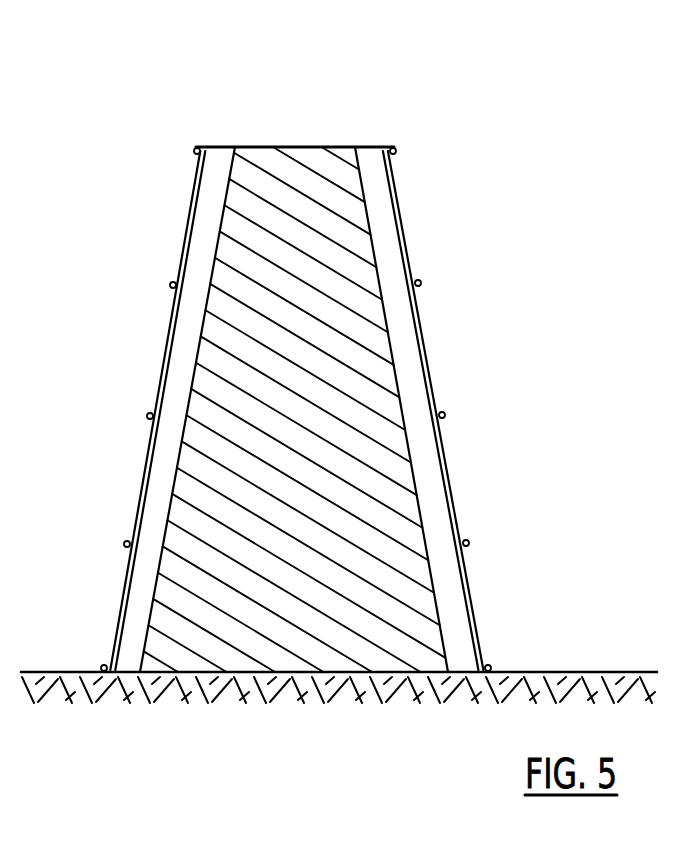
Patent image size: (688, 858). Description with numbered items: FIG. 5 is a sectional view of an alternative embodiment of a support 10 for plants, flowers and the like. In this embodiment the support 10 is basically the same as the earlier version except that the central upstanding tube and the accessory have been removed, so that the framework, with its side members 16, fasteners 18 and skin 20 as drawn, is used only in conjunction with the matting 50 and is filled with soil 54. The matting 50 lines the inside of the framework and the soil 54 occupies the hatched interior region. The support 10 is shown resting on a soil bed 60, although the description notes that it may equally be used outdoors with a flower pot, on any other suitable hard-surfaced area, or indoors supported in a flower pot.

The support 10 is at (462, 145).
The outer wall 16 is at (456, 416).
The fasteners 18 is at (465, 211).
The outer skin 20 is at (174, 312).
The matting 50 is at (427, 459).
The soil 54 is at (200, 467).
The soil bed 60 is at (532, 680).